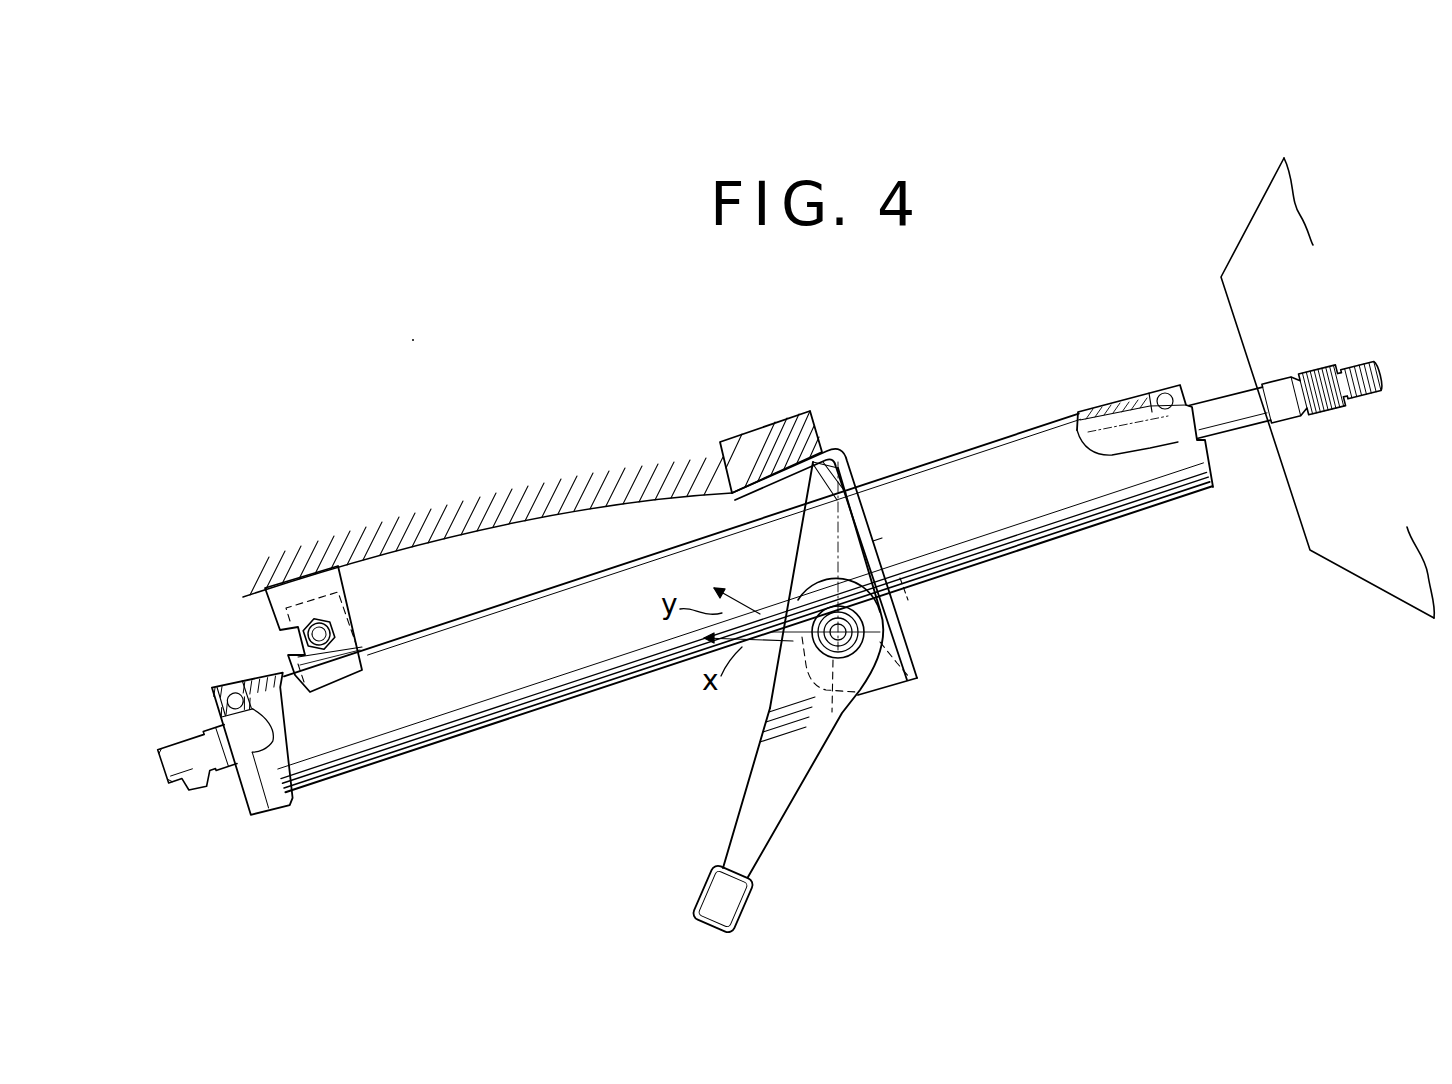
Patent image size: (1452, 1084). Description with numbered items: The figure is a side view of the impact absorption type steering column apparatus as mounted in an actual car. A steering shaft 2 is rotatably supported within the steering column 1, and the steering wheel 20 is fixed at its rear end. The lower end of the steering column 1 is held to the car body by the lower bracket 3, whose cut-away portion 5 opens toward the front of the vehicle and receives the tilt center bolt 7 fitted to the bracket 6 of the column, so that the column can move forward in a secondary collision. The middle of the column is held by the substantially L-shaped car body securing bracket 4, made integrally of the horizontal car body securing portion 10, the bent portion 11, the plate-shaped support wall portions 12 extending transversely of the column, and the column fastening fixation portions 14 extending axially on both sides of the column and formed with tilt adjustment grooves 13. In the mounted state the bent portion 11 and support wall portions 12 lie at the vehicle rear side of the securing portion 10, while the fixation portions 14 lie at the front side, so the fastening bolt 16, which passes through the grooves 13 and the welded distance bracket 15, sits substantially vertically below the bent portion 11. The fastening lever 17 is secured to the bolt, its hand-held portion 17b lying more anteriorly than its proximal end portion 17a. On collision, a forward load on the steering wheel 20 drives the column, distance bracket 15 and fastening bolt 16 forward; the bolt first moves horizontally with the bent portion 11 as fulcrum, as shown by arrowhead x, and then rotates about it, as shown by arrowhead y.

The steering column 1 is at (995, 447).
The steering shaft 2 is at (1240, 452).
The lower bracket 3 is at (348, 596).
The car body securing bracket 4 is at (829, 524).
The cut-away portion 5 is at (288, 632).
The bracket 6 is at (366, 660).
The tilt center bolt 7 is at (290, 672).
The car body securing portion 10 is at (776, 452).
The bent portion 11 is at (840, 452).
The plate-shaped support wall portions 12 is at (873, 541).
The tilt adjustment grooves 13 is at (840, 707).
The column fastening fixation portions 14 is at (908, 683).
The distance bracket 15 is at (905, 585).
The fastening bolt 16 is at (860, 694).
The fastening lever 17 is at (755, 698).
The proximal end portion 17a is at (812, 596).
The portion to be hand-held 17b is at (707, 893).
The steering wheel 20 is at (1346, 549).